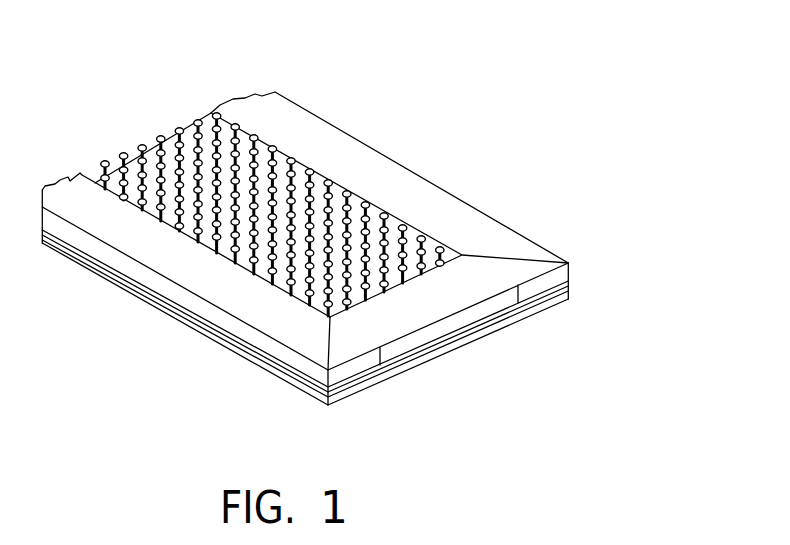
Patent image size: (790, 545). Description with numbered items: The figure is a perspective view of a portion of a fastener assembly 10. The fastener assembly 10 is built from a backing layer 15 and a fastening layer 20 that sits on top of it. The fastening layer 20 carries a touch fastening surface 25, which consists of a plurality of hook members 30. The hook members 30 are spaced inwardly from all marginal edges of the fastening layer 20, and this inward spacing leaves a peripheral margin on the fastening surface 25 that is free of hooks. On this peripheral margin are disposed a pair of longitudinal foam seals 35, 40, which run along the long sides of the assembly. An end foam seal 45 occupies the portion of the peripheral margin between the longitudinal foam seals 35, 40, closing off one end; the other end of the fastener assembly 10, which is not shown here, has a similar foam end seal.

The fastener assembly 10 is at (352, 230).
The backing layer 15 is at (318, 396).
The fastening layer 20 is at (352, 310).
The touch fastening surface 25 is at (147, 141).
The hook members 30 is at (275, 135).
The longitudinal foam seal 35 is at (173, 267).
The longitudinal foam seal 40 is at (310, 240).
The end foam seal 45 is at (442, 302).